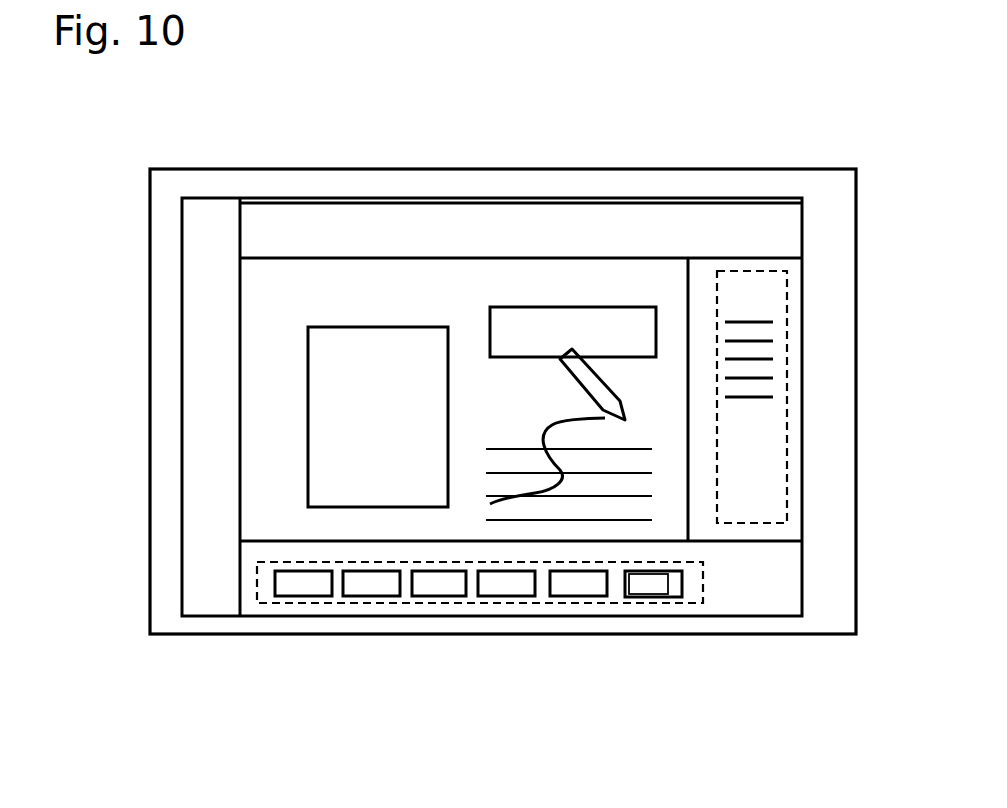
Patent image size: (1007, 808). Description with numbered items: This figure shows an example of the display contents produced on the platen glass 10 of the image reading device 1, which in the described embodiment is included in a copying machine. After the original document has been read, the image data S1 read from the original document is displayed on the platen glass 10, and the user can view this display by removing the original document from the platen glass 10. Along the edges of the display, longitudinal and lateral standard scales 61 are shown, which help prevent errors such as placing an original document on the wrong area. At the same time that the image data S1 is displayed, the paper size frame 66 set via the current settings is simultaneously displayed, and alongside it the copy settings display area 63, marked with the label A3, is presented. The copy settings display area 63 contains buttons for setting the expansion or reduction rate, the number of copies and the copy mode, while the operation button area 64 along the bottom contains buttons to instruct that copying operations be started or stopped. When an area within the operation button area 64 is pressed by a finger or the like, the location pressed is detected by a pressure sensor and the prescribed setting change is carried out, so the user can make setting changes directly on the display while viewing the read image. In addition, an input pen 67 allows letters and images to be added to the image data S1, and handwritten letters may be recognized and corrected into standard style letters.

The image reading device 1 is at (740, 141).
The platen glass 10 is at (783, 602).
The standard scales 61 is at (280, 228).
The image data S1 is at (352, 282).
The input pen 67 is at (598, 390).
The paper size frame 66 is at (690, 395).
The copy settings display area 63 is at (809, 415).
The area A3 is at (752, 415).
The operation button area 64 is at (704, 590).